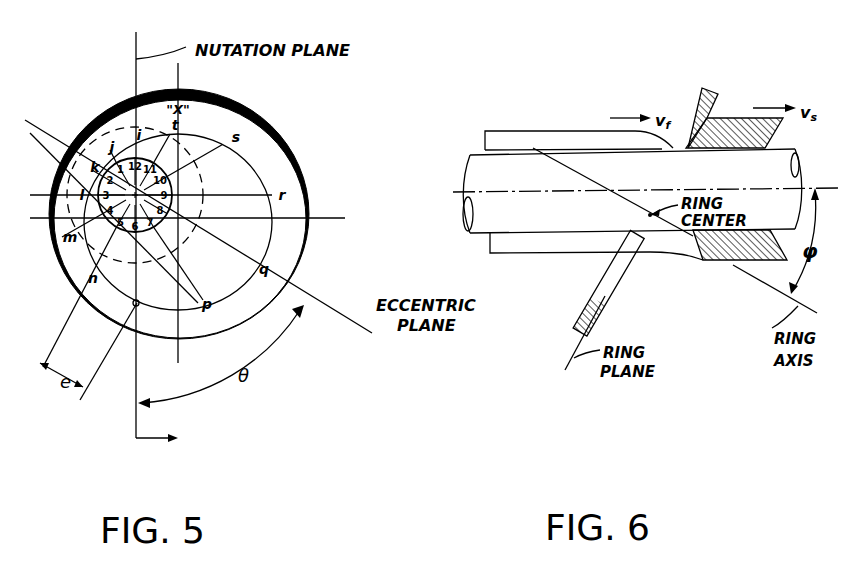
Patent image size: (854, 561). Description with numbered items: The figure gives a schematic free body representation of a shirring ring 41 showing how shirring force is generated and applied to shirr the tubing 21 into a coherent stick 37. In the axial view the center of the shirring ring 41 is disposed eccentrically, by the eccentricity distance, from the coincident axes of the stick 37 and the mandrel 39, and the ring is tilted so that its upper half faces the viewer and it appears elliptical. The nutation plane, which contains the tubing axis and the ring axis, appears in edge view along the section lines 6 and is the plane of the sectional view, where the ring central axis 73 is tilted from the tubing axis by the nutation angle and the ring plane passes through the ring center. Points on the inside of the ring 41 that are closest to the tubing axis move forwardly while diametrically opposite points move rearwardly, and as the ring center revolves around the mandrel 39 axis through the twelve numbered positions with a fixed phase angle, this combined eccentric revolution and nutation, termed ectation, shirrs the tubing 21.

In FIG. 5, the section lines 6 is at (136, 32).
In FIG. 5, the tubing 21 is at (115, 101).
In FIG. 6, the tubing 21 is at (508, 139).
In FIG. 6, the stick 37 is at (717, 262).
In FIG. 6, the mandrel 39 is at (473, 167).
In FIG. 5, the shirring ring 41 is at (308, 239).
In FIG. 6, the shirring ring 41 is at (697, 104).
In FIG. 6, the ring central axis 73 is at (593, 180).